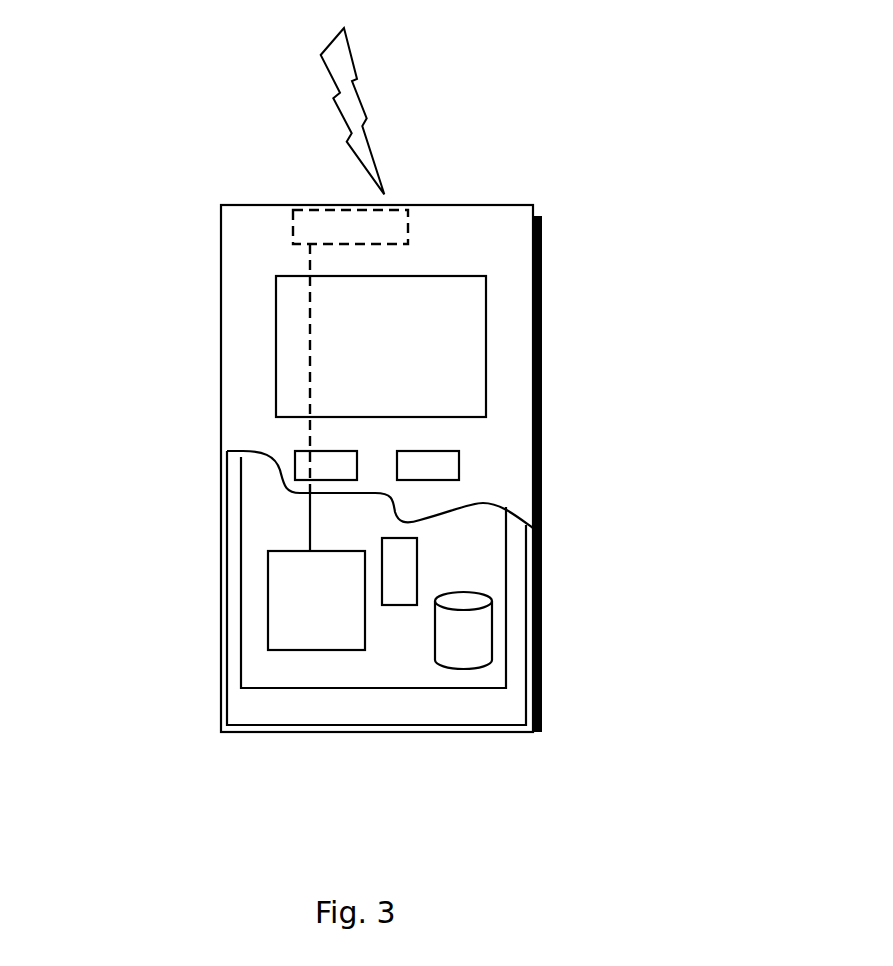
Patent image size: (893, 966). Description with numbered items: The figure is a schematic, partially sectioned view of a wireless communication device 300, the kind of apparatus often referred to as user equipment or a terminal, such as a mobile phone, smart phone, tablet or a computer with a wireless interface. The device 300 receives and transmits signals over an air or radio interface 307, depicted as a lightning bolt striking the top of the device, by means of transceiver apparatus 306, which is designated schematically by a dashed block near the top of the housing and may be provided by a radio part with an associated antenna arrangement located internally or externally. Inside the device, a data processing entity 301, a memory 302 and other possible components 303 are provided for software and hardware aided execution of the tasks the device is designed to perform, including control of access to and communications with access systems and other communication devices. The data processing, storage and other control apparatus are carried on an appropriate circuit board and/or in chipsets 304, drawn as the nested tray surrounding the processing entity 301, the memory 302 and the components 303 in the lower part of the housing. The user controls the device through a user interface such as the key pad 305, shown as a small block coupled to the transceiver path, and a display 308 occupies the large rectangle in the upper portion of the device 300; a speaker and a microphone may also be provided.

The communication device 300 is at (222, 250).
The data processing entity 301 is at (275, 583).
The memory 302 is at (457, 642).
The other possible components 303 is at (399, 555).
The circuit board 304 is at (267, 670).
The key pad 305 is at (298, 467).
The transceiver apparatus 306 is at (398, 220).
The air or radio interface 307 is at (388, 129).
The display 308 is at (292, 332).